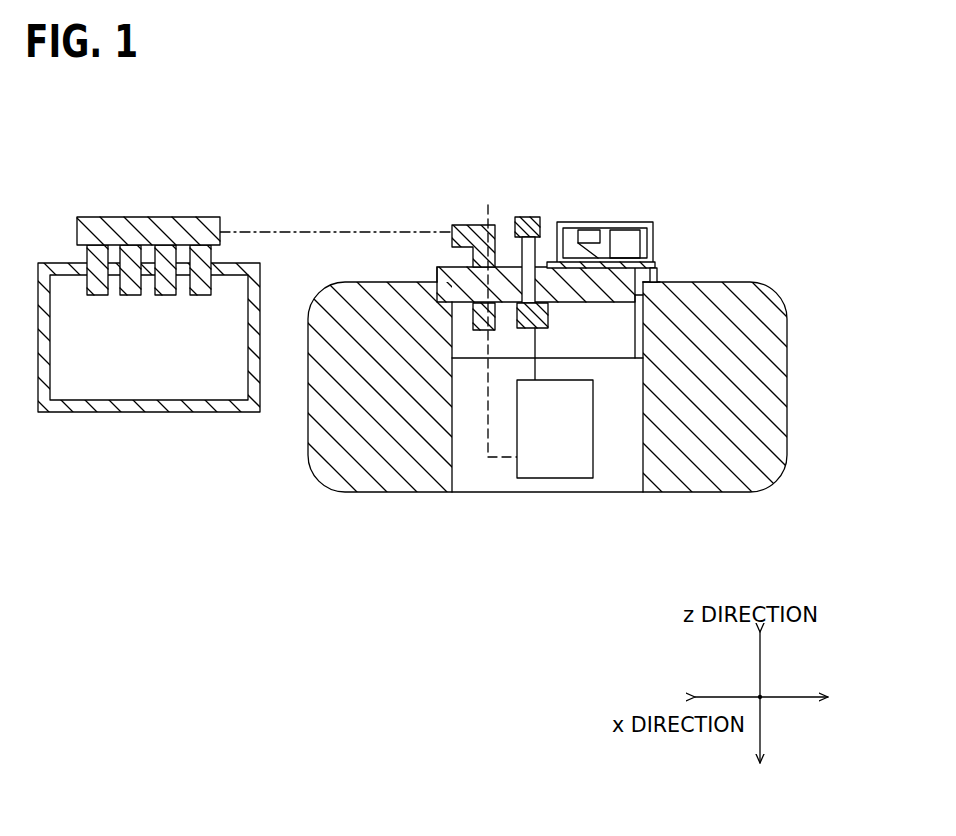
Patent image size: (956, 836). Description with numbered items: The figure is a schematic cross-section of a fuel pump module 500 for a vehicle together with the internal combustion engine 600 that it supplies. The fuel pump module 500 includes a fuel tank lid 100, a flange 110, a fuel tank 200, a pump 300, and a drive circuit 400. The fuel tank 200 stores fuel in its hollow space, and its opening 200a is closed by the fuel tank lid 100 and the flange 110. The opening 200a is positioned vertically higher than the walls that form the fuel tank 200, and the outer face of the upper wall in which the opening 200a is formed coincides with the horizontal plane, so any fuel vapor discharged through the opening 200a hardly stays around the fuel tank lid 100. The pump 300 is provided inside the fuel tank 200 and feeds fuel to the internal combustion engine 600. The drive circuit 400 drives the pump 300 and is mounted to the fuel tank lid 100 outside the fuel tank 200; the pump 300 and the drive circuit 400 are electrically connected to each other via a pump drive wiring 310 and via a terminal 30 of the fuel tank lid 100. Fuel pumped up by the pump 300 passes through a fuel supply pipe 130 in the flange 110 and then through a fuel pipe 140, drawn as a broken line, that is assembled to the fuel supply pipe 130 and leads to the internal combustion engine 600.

The terminal 30 is at (653, 265).
The fuel tank lid 100 is at (630, 222).
The flange 110 is at (555, 280).
The fuel supply pipe 130 is at (478, 225).
The fuel pipe 140 is at (350, 228).
The fuel tank 200 is at (770, 420).
The opening 200a is at (643, 292).
The pump 300 is at (570, 470).
The pump drive wiring 310 is at (537, 340).
The drive circuit 400 is at (590, 222).
The fuel pump module 500 is at (740, 168).
The internal combustion engine 600 is at (202, 212).